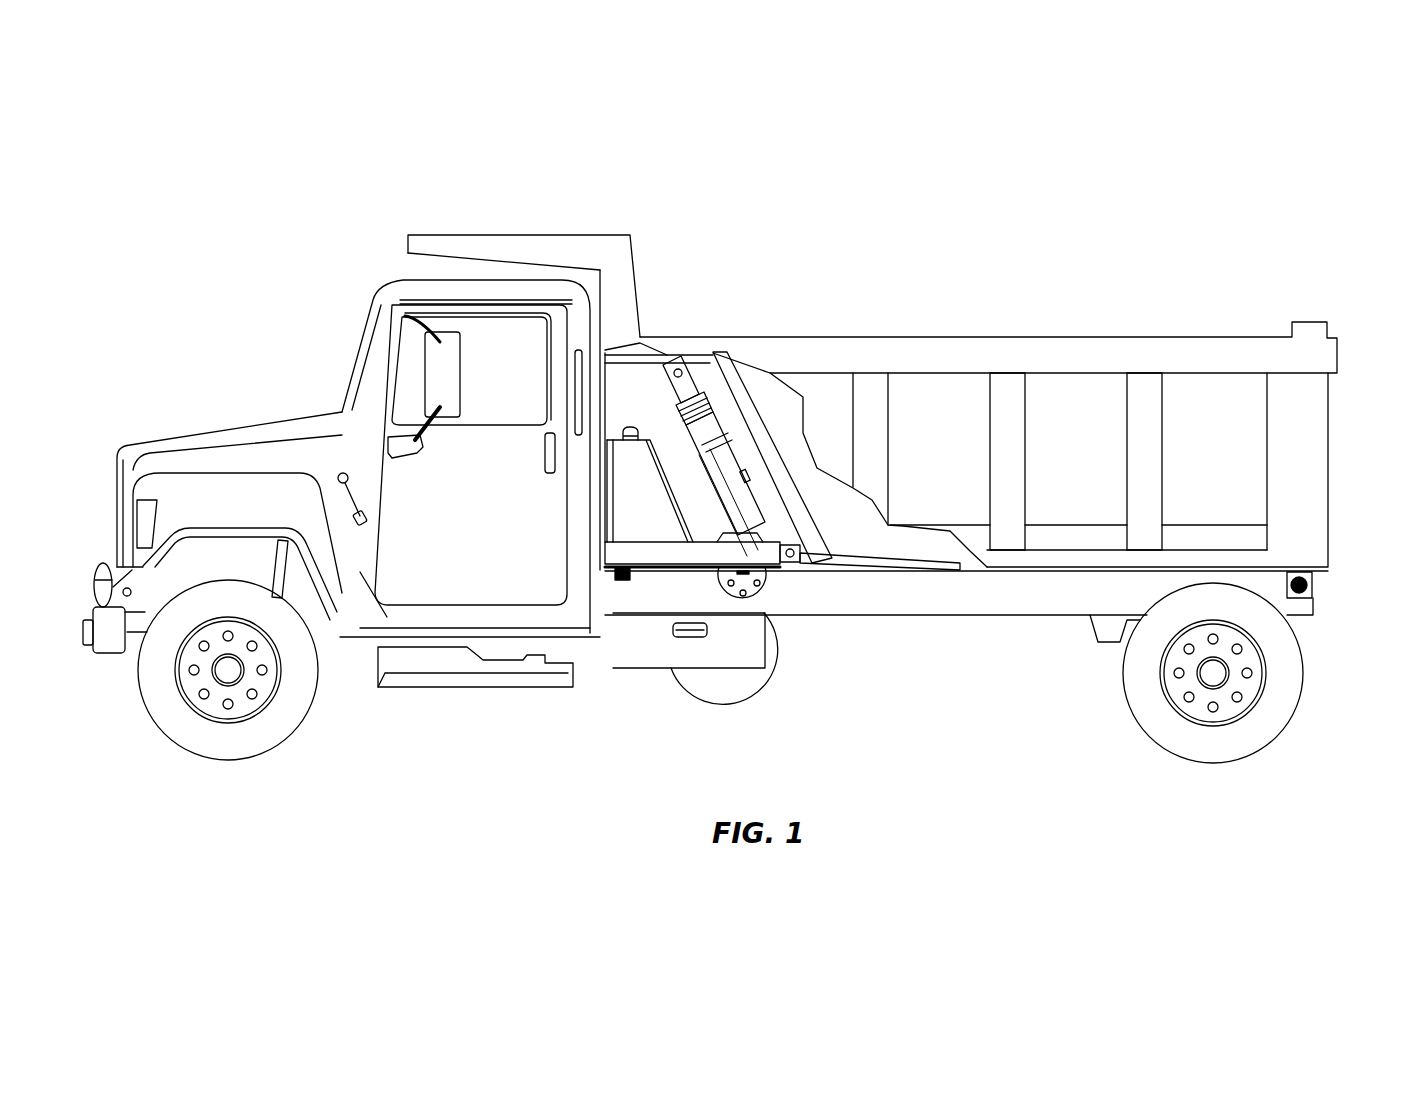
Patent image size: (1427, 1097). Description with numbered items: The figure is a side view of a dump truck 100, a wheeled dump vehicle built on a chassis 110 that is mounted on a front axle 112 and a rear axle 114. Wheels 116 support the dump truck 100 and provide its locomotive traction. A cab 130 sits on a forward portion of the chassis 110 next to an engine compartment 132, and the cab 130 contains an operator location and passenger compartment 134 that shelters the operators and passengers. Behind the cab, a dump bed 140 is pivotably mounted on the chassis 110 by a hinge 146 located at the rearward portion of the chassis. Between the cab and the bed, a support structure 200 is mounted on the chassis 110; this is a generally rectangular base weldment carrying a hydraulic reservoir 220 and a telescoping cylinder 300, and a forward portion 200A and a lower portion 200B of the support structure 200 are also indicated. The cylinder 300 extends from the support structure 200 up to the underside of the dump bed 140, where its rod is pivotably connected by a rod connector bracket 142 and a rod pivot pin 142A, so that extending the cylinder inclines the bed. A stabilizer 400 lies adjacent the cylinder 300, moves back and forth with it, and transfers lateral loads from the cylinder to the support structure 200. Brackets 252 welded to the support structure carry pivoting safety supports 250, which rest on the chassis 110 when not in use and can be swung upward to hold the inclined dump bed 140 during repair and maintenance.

The dump truck 100 is at (1040, 218).
The chassis 110 is at (1013, 593).
The front axle 112 is at (228, 670).
The rear axle 114 is at (1213, 673).
The wheels 116 is at (198, 743).
The cab 130 is at (473, 290).
The engine compartment 132 is at (250, 457).
The operator location and passenger compartment 134 is at (490, 357).
The dump bed 140 is at (1128, 348).
The rod connector bracket 142 is at (677, 366).
The rod pivot pin 142A is at (683, 364).
The hinge 146 is at (1310, 580).
The support structure 200 is at (773, 588).
The front mounting portion 200A is at (635, 572).
The hydraulic pump 200B is at (747, 580).
The hydraulic reservoir 220 is at (633, 503).
The safety supports 250 is at (877, 558).
The brackets 252 is at (790, 548).
The telescoping cylinder 300 is at (698, 430).
The stabilizer 400 is at (735, 462).